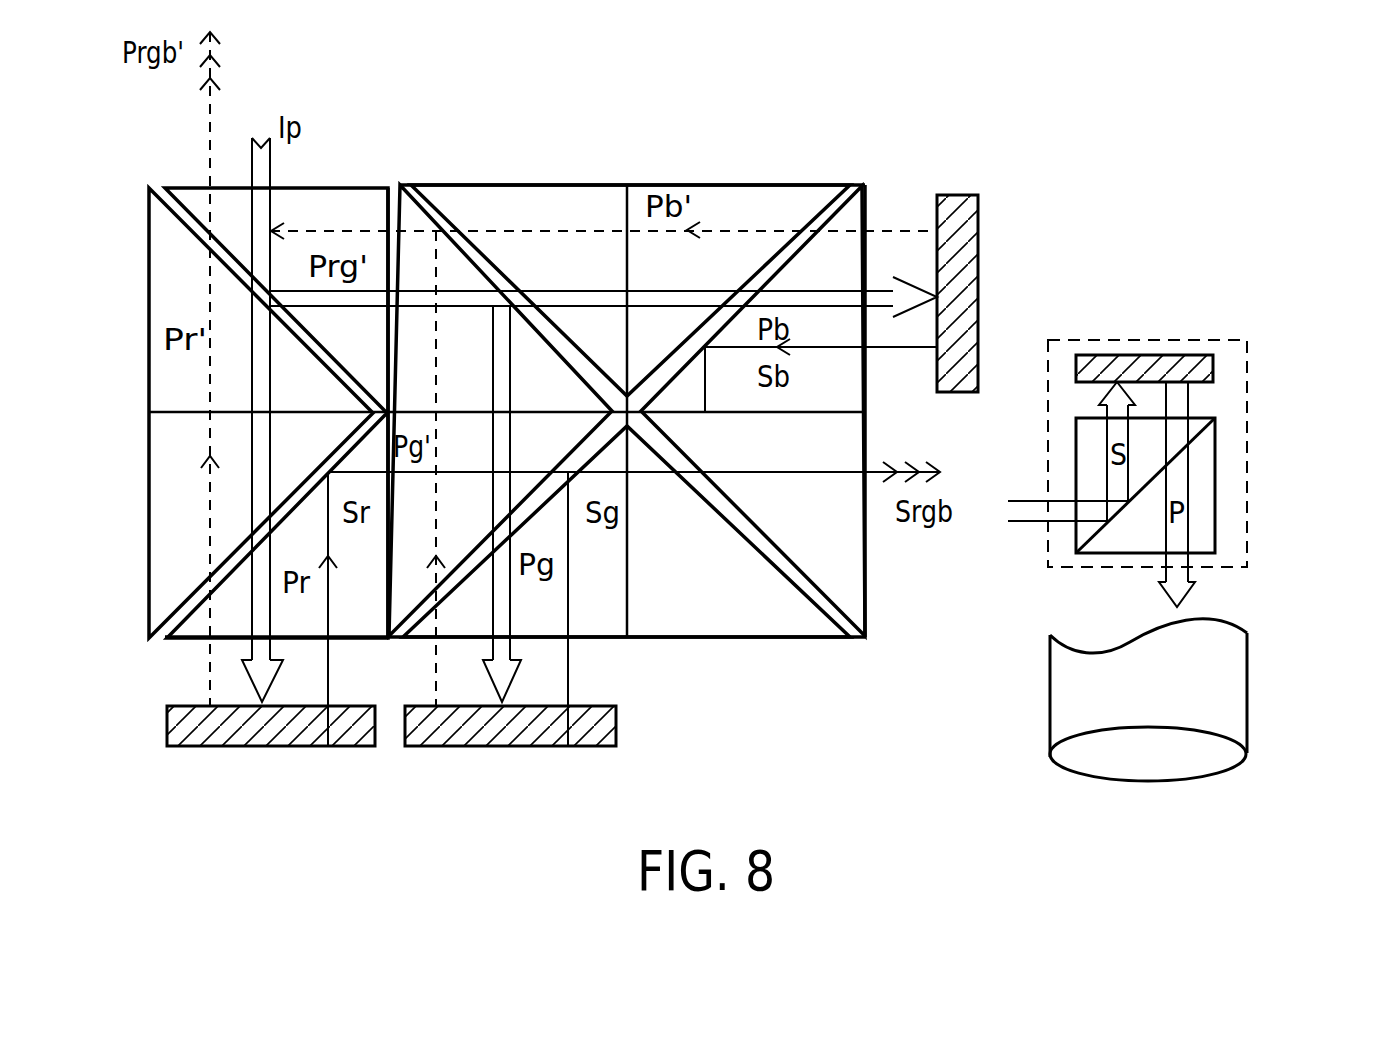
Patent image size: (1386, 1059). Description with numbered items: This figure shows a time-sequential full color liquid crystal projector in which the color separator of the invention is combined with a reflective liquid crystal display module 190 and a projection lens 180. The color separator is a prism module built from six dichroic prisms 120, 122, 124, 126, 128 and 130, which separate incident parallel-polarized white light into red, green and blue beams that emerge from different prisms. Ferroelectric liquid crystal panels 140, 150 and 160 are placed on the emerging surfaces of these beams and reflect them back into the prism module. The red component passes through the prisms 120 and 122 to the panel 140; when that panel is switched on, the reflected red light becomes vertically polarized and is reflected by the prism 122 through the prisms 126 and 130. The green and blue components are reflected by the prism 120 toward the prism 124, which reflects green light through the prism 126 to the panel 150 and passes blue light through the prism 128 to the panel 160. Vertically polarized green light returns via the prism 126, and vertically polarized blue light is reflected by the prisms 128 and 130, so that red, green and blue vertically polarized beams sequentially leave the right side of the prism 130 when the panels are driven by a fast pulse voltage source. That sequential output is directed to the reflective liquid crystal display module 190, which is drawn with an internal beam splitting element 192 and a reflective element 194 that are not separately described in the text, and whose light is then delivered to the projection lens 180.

The dichroic prism 120 is at (314, 187).
The dichroic prism 122 is at (187, 643).
The dichroic prism 124 is at (506, 185).
The dichroic prism 126 is at (590, 638).
The dichroic prism 128 is at (714, 185).
The dichroic prism 130 is at (715, 638).
The ferroelectric liquid crystal panel 140 is at (175, 748).
The ferroelectric liquid crystal panel 150 is at (413, 748).
The ferroelectric liquid crystal panel 160 is at (965, 195).
The projection lens 180 is at (1215, 687).
The reflective liquid crystal display module 190 is at (1100, 340).
The polarizing beam splitter cube 192 is at (1180, 480).
The reflecting mirror 194 is at (1188, 355).